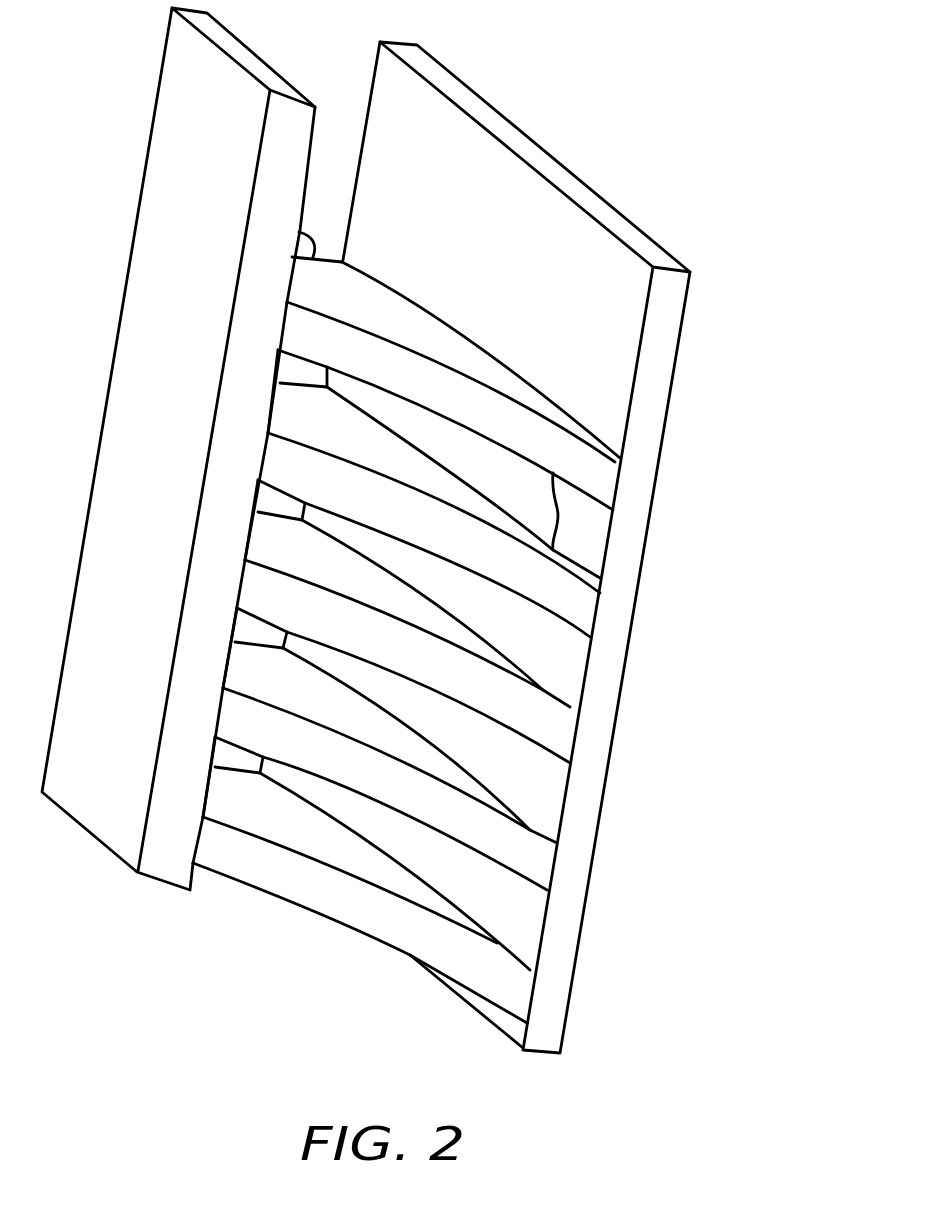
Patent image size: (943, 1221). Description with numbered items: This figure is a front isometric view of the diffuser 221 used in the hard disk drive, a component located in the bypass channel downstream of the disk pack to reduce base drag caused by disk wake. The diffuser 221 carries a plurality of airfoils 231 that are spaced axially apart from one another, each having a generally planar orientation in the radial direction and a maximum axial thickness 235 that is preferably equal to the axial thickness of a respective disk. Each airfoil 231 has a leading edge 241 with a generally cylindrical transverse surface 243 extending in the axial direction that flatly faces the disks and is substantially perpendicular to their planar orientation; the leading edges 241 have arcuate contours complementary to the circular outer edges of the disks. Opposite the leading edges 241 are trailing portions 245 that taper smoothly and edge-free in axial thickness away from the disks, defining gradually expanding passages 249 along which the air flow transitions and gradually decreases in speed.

The diffuser 221 is at (389, 530).
The airfoils 231 is at (440, 337).
The leading edge 241 is at (500, 387).
The transverse surface 243 is at (527, 433).
The trailing portions 245 is at (318, 253).
The gradually expanding passages 249 is at (558, 513).
The maximum axial thickness 235 is at (562, 662).